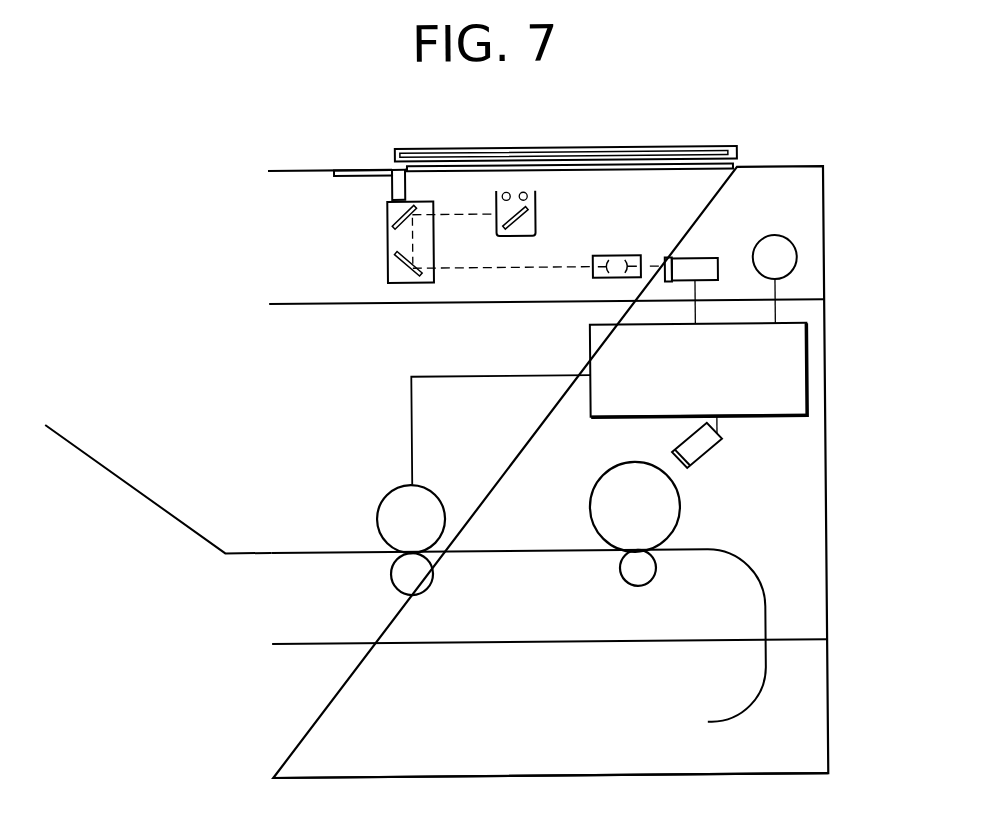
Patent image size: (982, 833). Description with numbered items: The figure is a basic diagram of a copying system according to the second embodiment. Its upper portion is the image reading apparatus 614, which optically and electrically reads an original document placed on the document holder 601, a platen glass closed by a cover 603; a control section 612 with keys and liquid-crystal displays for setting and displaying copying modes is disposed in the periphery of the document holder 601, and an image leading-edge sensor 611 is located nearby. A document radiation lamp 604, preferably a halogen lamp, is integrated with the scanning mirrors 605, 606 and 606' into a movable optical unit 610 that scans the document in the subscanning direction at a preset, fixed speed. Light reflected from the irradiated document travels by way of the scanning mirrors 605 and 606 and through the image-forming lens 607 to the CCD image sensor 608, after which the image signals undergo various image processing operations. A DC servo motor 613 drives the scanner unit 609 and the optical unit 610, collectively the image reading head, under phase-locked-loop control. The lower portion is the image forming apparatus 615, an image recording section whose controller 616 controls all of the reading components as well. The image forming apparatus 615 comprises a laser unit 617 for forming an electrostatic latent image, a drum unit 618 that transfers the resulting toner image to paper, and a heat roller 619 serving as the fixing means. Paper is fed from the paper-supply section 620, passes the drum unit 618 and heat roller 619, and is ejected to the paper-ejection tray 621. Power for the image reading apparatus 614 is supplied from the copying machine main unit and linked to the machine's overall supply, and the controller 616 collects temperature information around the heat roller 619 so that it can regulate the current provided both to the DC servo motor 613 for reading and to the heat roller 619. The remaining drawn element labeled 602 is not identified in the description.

The document holder 601 is at (705, 177).
The platen cover 602 is at (735, 152).
The cover 603 is at (595, 150).
The document radiation lamp 604 is at (525, 193).
The scanning mirror 605 is at (523, 242).
The scanning mirror 606 is at (363, 214).
The scanning mirror 606' is at (365, 266).
The image-forming lens 607 is at (632, 261).
The CCD image sensor 608 is at (697, 264).
The scanner unit 609 is at (538, 209).
The movable optical unit 610 is at (387, 272).
The image leading-edge sensor 611 is at (398, 183).
The control section 612 is at (337, 170).
The DC servo motor 613 is at (785, 240).
The image reading apparatus 614 is at (280, 226).
The image forming apparatus 615 is at (275, 422).
The controller 616 is at (795, 392).
The laser unit 617 is at (710, 454).
The drum unit 618 is at (678, 516).
The heat roller 619 is at (433, 514).
The paper-supply section 620 is at (270, 727).
The paper-ejection tray 621 is at (183, 524).